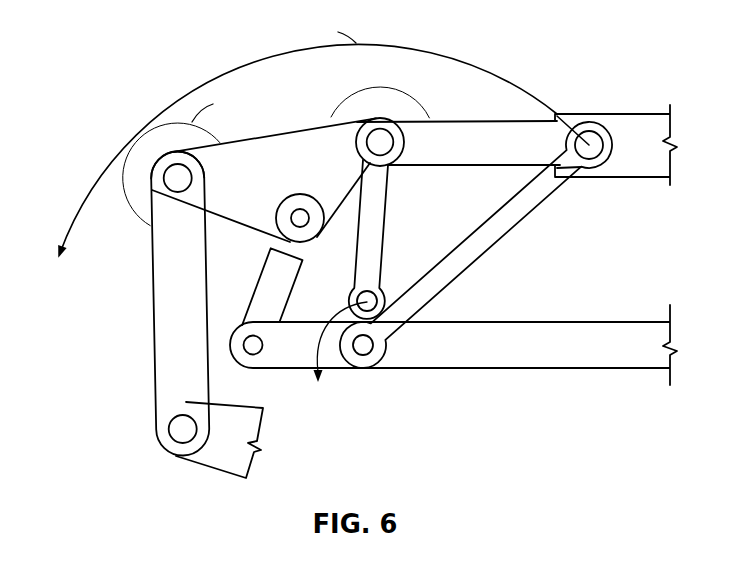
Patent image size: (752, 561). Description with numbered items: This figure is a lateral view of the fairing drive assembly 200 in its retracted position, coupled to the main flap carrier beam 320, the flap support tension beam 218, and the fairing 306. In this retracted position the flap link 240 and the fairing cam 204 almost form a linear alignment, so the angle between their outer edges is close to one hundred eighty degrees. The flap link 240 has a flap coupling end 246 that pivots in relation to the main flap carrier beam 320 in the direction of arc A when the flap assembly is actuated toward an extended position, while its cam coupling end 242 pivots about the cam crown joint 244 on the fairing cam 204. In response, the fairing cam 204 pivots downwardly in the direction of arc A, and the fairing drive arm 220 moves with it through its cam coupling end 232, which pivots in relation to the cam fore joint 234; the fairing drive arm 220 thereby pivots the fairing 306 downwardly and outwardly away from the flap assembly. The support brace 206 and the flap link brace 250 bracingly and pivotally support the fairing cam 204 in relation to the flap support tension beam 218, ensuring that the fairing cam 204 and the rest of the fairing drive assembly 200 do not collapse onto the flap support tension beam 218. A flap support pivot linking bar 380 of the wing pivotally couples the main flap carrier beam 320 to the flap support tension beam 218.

The fairing drive assembly 200 is at (118, 374).
The fairing cam 204 is at (270, 163).
The support brace 206 is at (258, 287).
The flap support tension beam 218 is at (463, 368).
The fairing drive arm 220 is at (152, 326).
The cam coupling end 232 is at (152, 197).
The cam fore joint 234 is at (178, 178).
The flap link 240 is at (490, 140).
The cam coupling end 242 is at (364, 122).
The cam crown joint 244 is at (380, 142).
The flap coupling end 246 is at (603, 138).
The flap link brace 250 is at (385, 252).
The fairing 306 is at (207, 466).
The main flap carrier beam 320 is at (577, 113).
The flap support pivot linking bar 380 is at (518, 224).